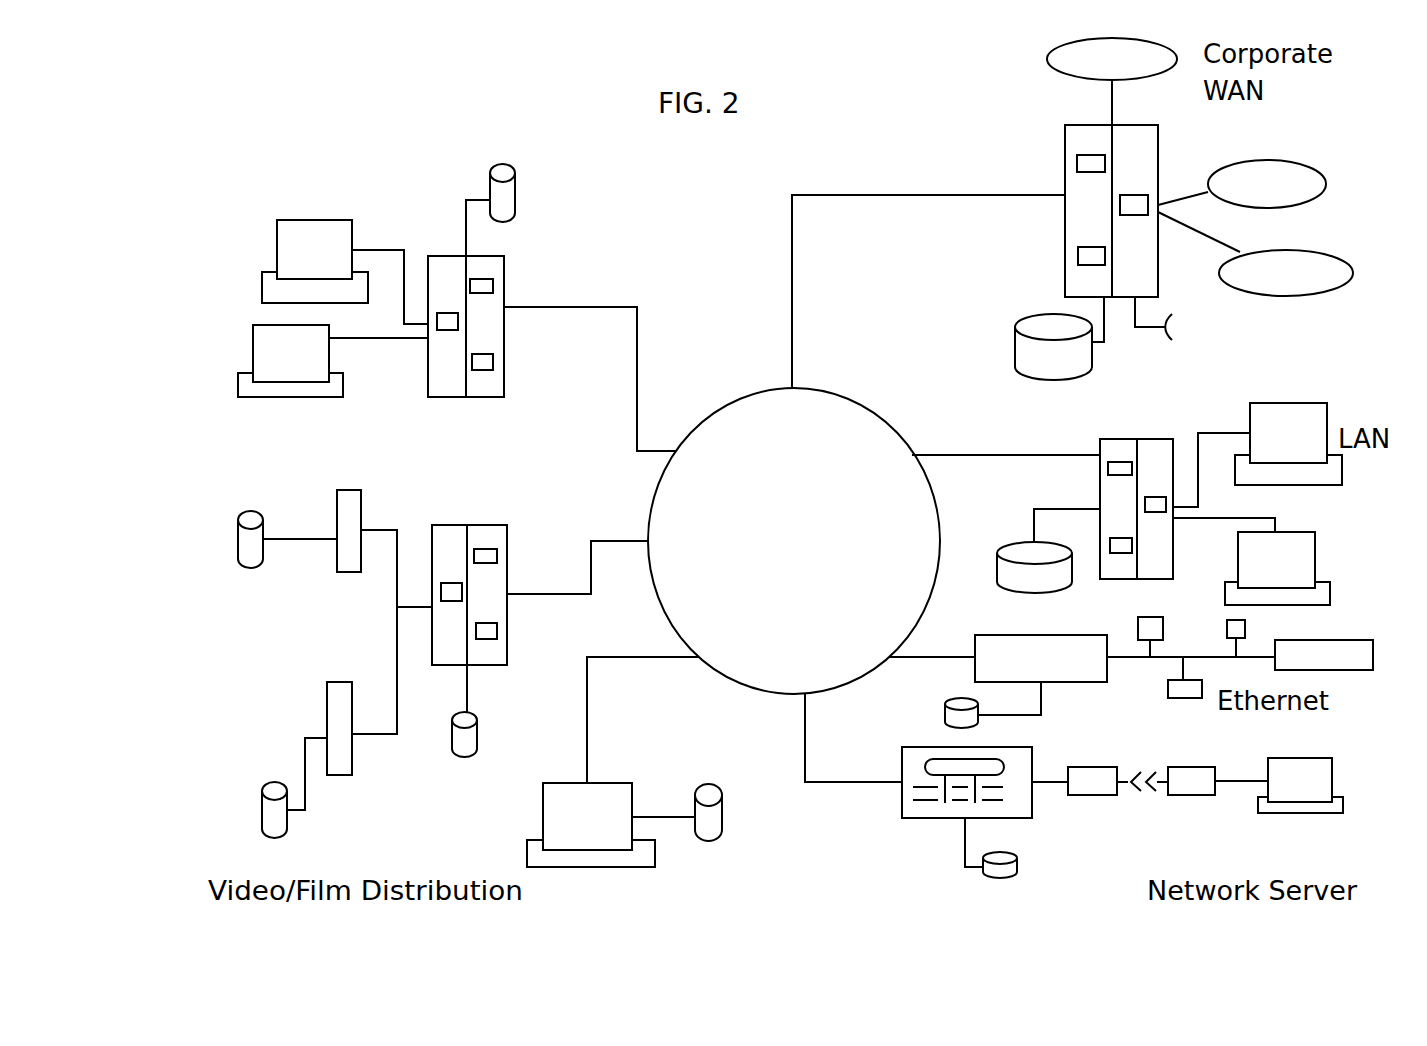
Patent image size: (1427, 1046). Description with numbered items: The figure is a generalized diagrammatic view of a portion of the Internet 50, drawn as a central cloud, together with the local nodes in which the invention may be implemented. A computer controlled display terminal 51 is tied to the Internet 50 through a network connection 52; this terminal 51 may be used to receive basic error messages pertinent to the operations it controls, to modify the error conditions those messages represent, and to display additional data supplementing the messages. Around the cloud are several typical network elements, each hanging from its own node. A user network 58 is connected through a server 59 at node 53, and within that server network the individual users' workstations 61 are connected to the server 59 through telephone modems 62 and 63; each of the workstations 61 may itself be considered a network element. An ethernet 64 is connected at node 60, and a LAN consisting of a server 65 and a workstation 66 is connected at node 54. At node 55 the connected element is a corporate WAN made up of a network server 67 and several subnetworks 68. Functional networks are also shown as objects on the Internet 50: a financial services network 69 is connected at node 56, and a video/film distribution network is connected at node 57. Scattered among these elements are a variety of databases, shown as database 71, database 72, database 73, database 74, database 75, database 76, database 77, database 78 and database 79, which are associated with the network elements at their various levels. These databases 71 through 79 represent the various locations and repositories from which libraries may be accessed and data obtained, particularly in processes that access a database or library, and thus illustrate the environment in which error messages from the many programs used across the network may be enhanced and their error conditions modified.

The Internet 50 is at (742, 438).
The computer controlled display terminal 51 is at (600, 868).
The network connection 52 is at (590, 748).
The node 53 is at (808, 694).
The node 54 is at (912, 455).
The node 55 is at (787, 392).
The node 56 is at (676, 452).
The node 57 is at (652, 540).
The user network 58 is at (1092, 795).
The server 59 is at (903, 818).
The node 60 is at (890, 657).
The users' workstations 61 is at (1305, 758).
The telephone modem 62 is at (1185, 788).
The telephone modem 63 is at (1092, 785).
The ethernet 64 is at (1023, 655).
The server 65 is at (1115, 450).
The workstation 66 is at (1298, 403).
The network server 67 is at (1082, 140).
The subnetworks 68 is at (1088, 62).
The financial services network 69 is at (407, 222).
The database 71 is at (722, 812).
The database 72 is at (945, 712).
The database 73 is at (1018, 575).
The database 74 is at (1062, 370).
The database 75 is at (1002, 873).
The database 76 is at (517, 183).
The database 77 is at (462, 757).
The database 78 is at (272, 812).
The database 79 is at (252, 555).